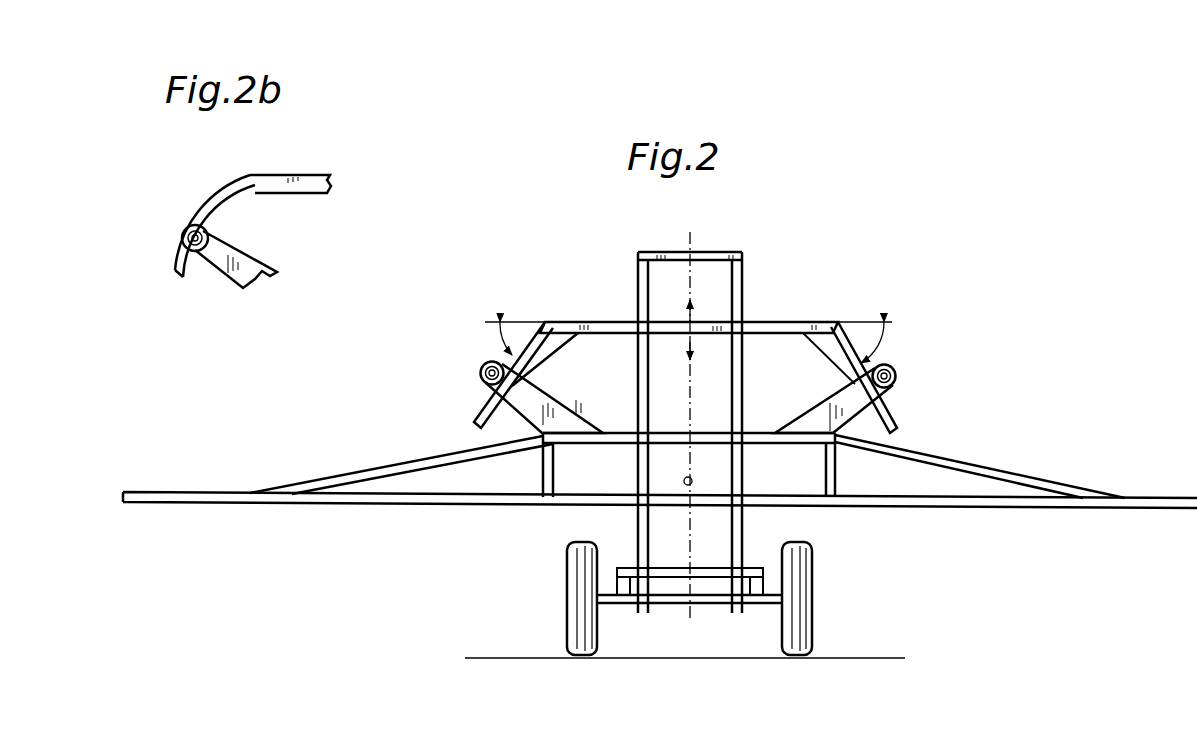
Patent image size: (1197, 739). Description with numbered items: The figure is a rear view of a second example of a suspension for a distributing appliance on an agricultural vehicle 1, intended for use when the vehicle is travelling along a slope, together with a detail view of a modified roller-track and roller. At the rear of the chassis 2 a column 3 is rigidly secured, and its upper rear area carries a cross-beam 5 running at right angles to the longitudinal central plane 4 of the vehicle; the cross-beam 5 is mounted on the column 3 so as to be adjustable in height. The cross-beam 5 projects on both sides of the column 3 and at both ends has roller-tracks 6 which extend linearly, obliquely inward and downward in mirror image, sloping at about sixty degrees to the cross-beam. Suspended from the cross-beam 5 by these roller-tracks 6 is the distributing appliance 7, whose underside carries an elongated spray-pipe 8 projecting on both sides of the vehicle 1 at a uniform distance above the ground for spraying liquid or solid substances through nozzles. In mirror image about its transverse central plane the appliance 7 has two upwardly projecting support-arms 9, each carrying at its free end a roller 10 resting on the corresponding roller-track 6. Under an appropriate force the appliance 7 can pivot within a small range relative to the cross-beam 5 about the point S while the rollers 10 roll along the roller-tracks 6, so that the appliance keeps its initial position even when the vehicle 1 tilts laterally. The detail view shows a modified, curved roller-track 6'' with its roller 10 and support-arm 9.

In FIG. 2, the agricultural vehicle 1 is at (555, 592).
In FIG. 2, the chassis 2 is at (657, 605).
In FIG. 2, the column 3 is at (743, 284).
In FIG. 2, the longitudinal central plane 4 is at (692, 241).
In FIG. 2b, the cross-beam 5 is at (298, 178).
In FIG. 2, the cross-beam 5 is at (779, 327).
In FIG. 2, the roller-track 6 is at (674, 389).
In FIG. 2b, the curved arm 6'' is at (212, 222).
In FIG. 2, the distributing appliance 7 is at (363, 468).
In FIG. 2, the spray-pipe 8 is at (194, 494).
In FIG. 2b, the support-arm 9 is at (232, 282).
In FIG. 2, the support-arm 9 is at (553, 411).
In FIG. 2b, the roller 10 is at (181, 240).
In FIG. 2, the roller 10 is at (481, 380).
In FIG. 2, the center point S is at (692, 480).